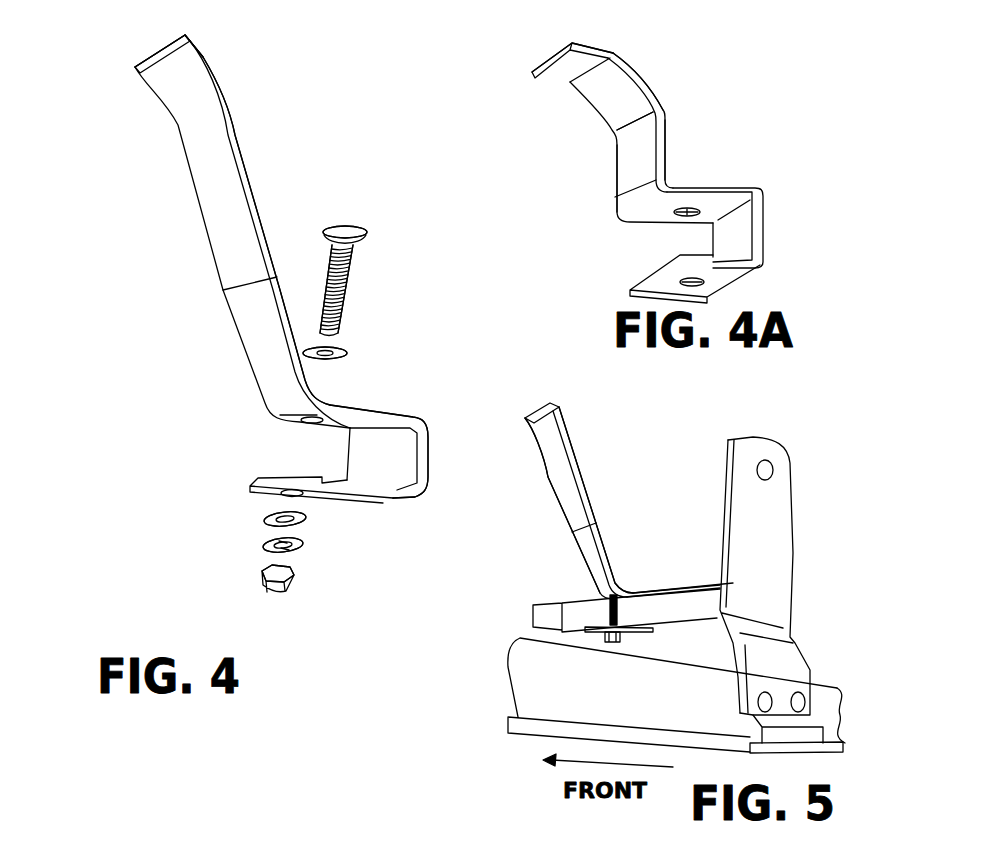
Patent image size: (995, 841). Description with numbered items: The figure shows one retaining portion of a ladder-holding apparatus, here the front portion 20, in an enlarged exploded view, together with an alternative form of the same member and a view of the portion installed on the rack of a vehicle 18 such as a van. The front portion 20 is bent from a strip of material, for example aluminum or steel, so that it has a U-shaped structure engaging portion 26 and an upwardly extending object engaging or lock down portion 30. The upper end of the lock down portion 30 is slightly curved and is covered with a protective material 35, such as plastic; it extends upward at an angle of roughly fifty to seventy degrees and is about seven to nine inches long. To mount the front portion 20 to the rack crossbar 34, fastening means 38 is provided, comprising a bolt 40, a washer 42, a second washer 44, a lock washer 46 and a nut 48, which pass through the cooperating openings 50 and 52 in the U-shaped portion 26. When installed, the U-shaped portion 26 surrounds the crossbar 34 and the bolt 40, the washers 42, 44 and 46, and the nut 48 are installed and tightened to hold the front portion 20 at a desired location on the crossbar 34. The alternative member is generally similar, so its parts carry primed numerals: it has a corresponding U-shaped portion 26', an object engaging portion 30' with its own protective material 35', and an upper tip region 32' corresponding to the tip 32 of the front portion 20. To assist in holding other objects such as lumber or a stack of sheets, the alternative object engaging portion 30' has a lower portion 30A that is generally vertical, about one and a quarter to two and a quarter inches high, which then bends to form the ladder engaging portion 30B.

In FIG. 5, the vehicle 18 is at (567, 697).
In FIG. 4, the front portion 20 is at (397, 252).
In FIG. 5, the front portion 20 is at (607, 481).
In FIG. 4, the U-shaped structure engaging portion 26 is at (391, 423).
In FIG. 5, the U-shaped structure engaging portion 26 is at (680, 542).
In FIG. 4A, the U-shaped structure engaging portion of alternative member 26' is at (743, 228).
In FIG. 4, the object engaging or lock down portion 30 is at (242, 231).
In FIG. 5, the object engaging or lock down portion 30 is at (565, 501).
In FIG. 4A, the object engaging portion of alternative member 30' is at (642, 133).
In FIG. 4A, the lower portion 30A is at (662, 148).
In FIG. 4A, the ladder engaging portion 30B is at (641, 69).
In FIG. 4, the upper free end 32 is at (216, 47).
In FIG. 4A, the upper free end (alternate) 32' is at (550, 77).
In FIG. 5, the rack crossbar 34 is at (553, 428).
In FIG. 4, the protective material 35 is at (181, 252).
In FIG. 5, the protective material 35 is at (540, 499).
In FIG. 4A, the protective material of alternative member 35' is at (586, 139).
In FIG. 4, the fastening means 38 is at (350, 367).
In FIG. 5, the fastening means 38 is at (600, 597).
In FIG. 4, the bolt 40 is at (348, 231).
In FIG. 4, the washer 42 is at (313, 347).
In FIG. 4, the second washer 44 is at (262, 518).
In FIG. 4, the lock washer 46 is at (265, 545).
In FIG. 4, the nut 48 is at (262, 576).
In FIG. 4, the cooperating opening 50 is at (288, 491).
In FIG. 4A, the cooperating opening 50 is at (743, 290).
In FIG. 4, the cooperating opening 52 is at (300, 426).
In FIG. 4A, the cooperating opening 52 is at (680, 222).